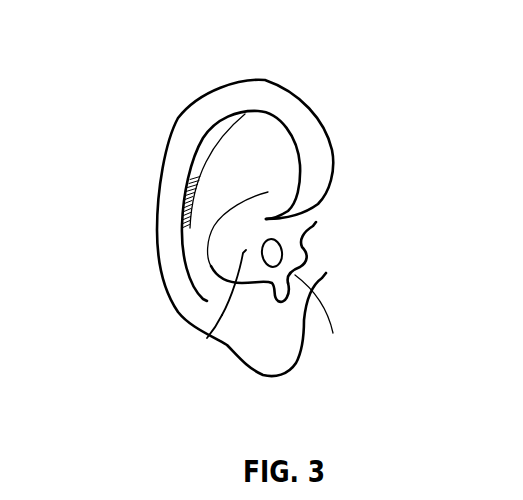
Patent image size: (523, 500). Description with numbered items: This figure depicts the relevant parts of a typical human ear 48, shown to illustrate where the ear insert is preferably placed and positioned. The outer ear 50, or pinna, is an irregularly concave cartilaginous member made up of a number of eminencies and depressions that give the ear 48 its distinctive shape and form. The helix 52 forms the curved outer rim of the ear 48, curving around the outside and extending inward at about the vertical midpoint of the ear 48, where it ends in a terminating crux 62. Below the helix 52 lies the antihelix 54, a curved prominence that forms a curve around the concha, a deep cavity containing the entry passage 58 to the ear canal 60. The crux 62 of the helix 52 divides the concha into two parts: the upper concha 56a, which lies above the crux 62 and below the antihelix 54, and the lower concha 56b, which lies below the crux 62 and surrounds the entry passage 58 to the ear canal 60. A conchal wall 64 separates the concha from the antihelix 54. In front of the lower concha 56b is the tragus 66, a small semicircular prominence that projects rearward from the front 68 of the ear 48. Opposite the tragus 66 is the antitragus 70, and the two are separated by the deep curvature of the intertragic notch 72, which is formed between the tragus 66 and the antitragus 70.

The ear 48 is at (310, 62).
The outer ear 50 is at (322, 113).
The helix 52 is at (236, 99).
The antihelix 54 is at (240, 168).
The upper concha 56a is at (260, 205).
The lower concha 56b is at (207, 338).
The entry passage 58 is at (278, 255).
The ear canal 60 is at (305, 249).
The crux 62 is at (296, 206).
The conchal wall 64 is at (243, 253).
The tragus 66 is at (333, 333).
The front 68 is at (302, 338).
The antitragus 70 is at (261, 286).
The intertragic notch 72 is at (280, 302).